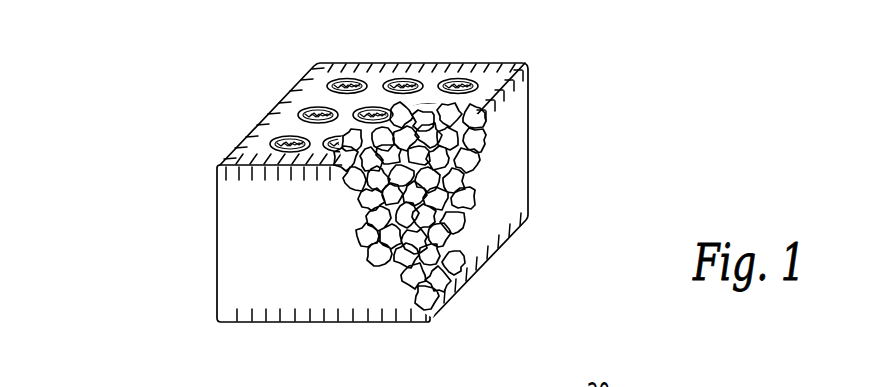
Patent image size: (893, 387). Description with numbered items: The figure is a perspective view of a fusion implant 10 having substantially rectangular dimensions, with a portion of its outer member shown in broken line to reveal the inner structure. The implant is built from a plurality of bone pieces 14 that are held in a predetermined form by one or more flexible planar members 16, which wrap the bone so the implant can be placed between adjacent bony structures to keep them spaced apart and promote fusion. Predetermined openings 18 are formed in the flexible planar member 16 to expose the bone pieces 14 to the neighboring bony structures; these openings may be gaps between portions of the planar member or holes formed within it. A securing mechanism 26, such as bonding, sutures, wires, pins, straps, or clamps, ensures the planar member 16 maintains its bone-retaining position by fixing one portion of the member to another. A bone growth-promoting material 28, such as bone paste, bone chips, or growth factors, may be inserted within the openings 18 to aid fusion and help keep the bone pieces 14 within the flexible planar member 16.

The fusion implant 10 is at (97, 93).
The bone pieces 14 is at (397, 251).
The flexible planar member 16 is at (268, 114).
The predetermined openings 18 is at (385, 78).
The securing mechanism 26 is at (509, 107).
The bone growth-promoting material 28 is at (461, 85).